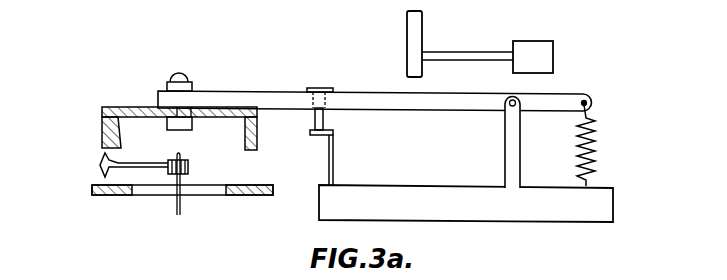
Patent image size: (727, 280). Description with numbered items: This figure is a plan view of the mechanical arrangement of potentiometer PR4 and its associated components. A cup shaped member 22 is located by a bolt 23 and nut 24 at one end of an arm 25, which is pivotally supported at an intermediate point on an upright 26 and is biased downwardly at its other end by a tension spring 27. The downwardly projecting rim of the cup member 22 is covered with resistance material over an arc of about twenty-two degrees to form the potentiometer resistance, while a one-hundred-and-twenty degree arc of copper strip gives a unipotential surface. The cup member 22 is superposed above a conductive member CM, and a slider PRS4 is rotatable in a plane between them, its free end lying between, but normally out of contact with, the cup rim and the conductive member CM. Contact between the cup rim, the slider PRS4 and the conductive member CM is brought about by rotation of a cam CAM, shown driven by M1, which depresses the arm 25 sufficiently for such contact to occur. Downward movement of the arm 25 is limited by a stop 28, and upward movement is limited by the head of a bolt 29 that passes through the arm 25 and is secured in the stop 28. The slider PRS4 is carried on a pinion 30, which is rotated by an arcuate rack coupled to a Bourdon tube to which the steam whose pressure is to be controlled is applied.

The cup shaped member 22 is at (110, 107).
The bolt 23 is at (175, 131).
The nut 24 is at (185, 83).
The arm 25 is at (268, 91).
The upright 26 is at (505, 143).
The tension spring 27 is at (593, 148).
The stop 28 is at (335, 153).
The bolt 29 is at (320, 88).
The pinion 30 is at (188, 168).
The slider PRS4 is at (100, 165).
The conductive member CM is at (108, 195).
The cam CAM is at (412, 28).
The motor M1 is at (530, 50).